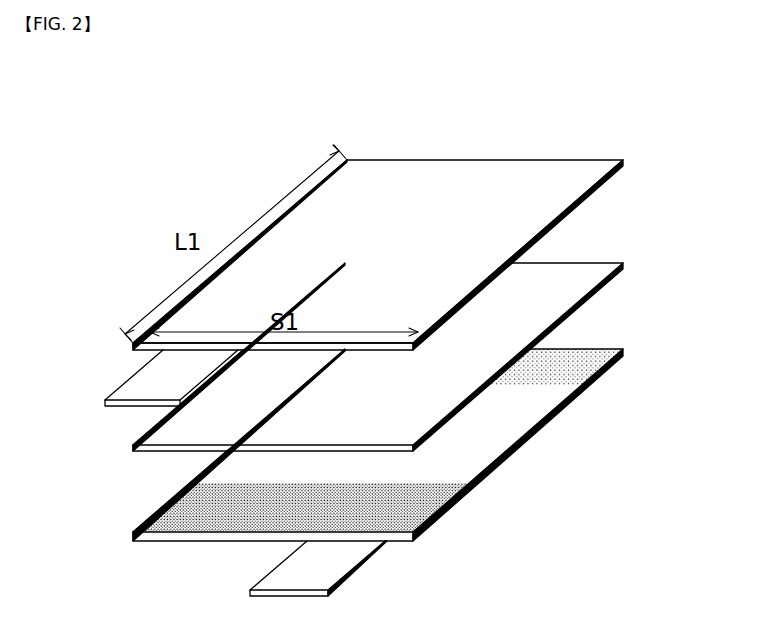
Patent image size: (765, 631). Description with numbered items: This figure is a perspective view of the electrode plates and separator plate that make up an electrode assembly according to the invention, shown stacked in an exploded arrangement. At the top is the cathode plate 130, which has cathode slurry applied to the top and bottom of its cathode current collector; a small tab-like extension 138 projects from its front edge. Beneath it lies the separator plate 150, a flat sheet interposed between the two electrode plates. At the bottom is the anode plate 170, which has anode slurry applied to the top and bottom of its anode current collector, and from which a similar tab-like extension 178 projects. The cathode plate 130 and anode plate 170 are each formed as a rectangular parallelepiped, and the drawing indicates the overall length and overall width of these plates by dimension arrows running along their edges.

The cathode plate 130 is at (535, 185).
The tab of first plate 138 is at (145, 387).
The separator plate 150 is at (575, 285).
The anode plate 170 is at (592, 358).
The tab of third plate 178 is at (323, 575).